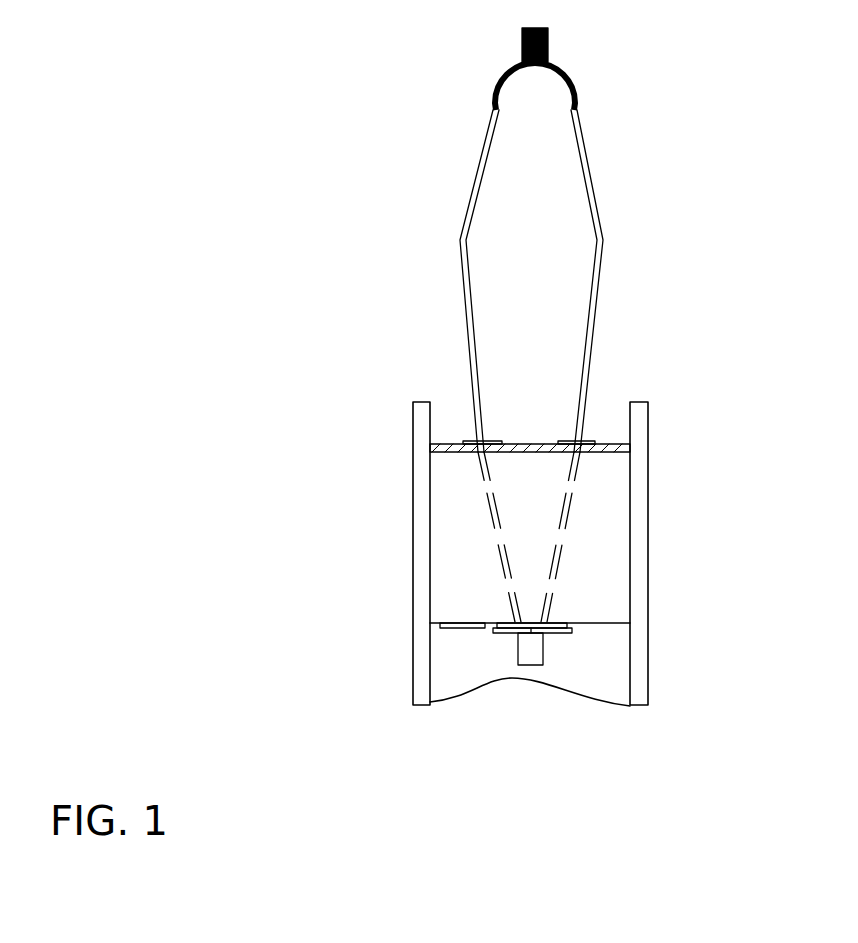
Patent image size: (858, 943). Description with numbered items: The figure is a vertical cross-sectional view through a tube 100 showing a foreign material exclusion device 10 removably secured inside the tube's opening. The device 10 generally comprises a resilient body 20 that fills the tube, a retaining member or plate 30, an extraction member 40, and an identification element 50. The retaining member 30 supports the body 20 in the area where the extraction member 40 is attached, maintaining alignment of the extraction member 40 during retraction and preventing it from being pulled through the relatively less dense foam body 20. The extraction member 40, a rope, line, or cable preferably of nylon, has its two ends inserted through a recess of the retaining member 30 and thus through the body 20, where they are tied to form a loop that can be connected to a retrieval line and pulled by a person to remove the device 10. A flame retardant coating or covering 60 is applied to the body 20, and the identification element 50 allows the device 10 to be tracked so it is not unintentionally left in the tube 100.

The tube 100 is at (413, 645).
The resilient body 20 is at (608, 532).
The flame retardant coating or covering 60 is at (617, 442).
The foreign material exclusion device 10 is at (533, 428).
The extraction member 40 is at (607, 237).
The identification element 50 is at (462, 630).
The retaining member or plate 30 is at (552, 637).